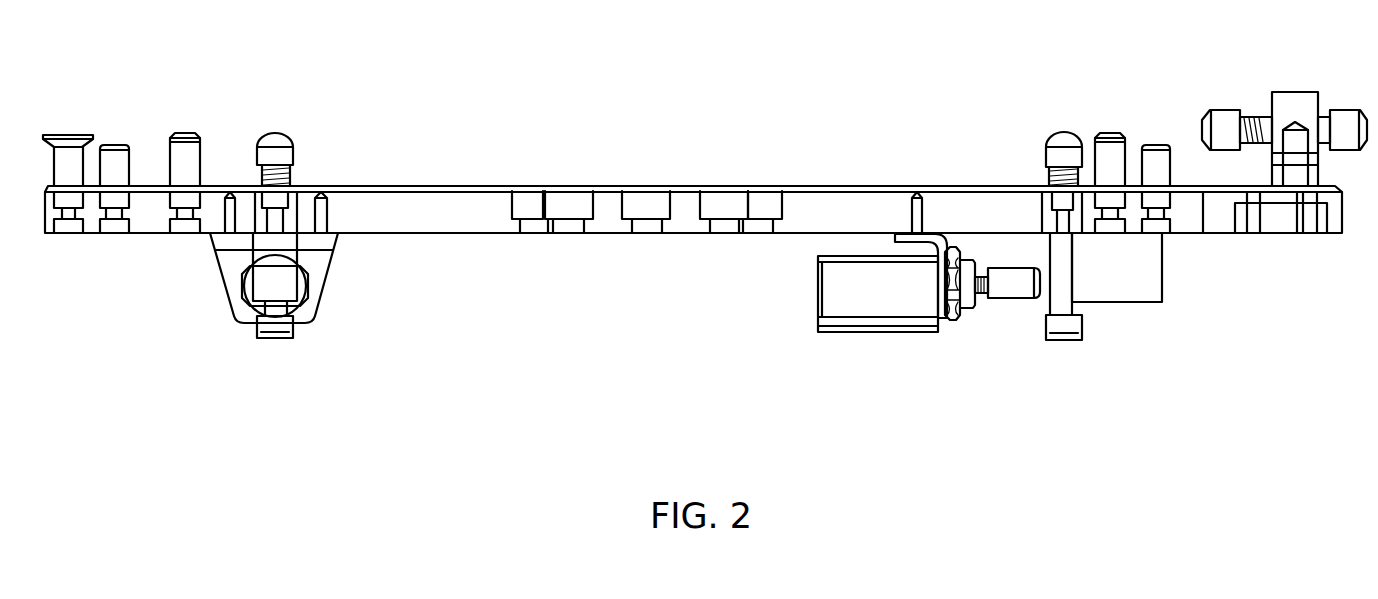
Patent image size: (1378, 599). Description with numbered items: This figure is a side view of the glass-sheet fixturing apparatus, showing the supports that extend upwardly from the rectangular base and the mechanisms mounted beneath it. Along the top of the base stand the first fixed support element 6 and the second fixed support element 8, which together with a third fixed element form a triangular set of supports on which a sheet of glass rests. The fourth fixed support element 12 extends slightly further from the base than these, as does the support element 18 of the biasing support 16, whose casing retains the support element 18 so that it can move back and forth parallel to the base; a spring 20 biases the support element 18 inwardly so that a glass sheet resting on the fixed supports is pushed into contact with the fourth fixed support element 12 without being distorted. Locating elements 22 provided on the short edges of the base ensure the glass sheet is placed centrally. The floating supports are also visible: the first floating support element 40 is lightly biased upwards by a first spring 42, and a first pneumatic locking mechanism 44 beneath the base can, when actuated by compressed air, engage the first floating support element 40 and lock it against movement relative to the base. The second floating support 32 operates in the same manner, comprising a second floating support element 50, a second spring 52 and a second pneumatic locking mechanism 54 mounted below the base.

The first fixed support element 6 is at (115, 145).
The second fixed support element 8 is at (1157, 145).
The fourth fixed support element 12 is at (71, 133).
The biasing support 16 is at (1293, 92).
The support element 18 is at (1222, 110).
The spring 20 is at (1260, 117).
The locating elements 22 is at (192, 133).
The second floating support 32 is at (970, 334).
The first floating support element 40 is at (293, 152).
The first spring 42 is at (290, 180).
The first pneumatic locking mechanism 44 is at (322, 267).
The second floating support element 50 is at (1058, 140).
The second spring 52 is at (1048, 177).
The second pneumatic locking mechanism 54 is at (868, 308).